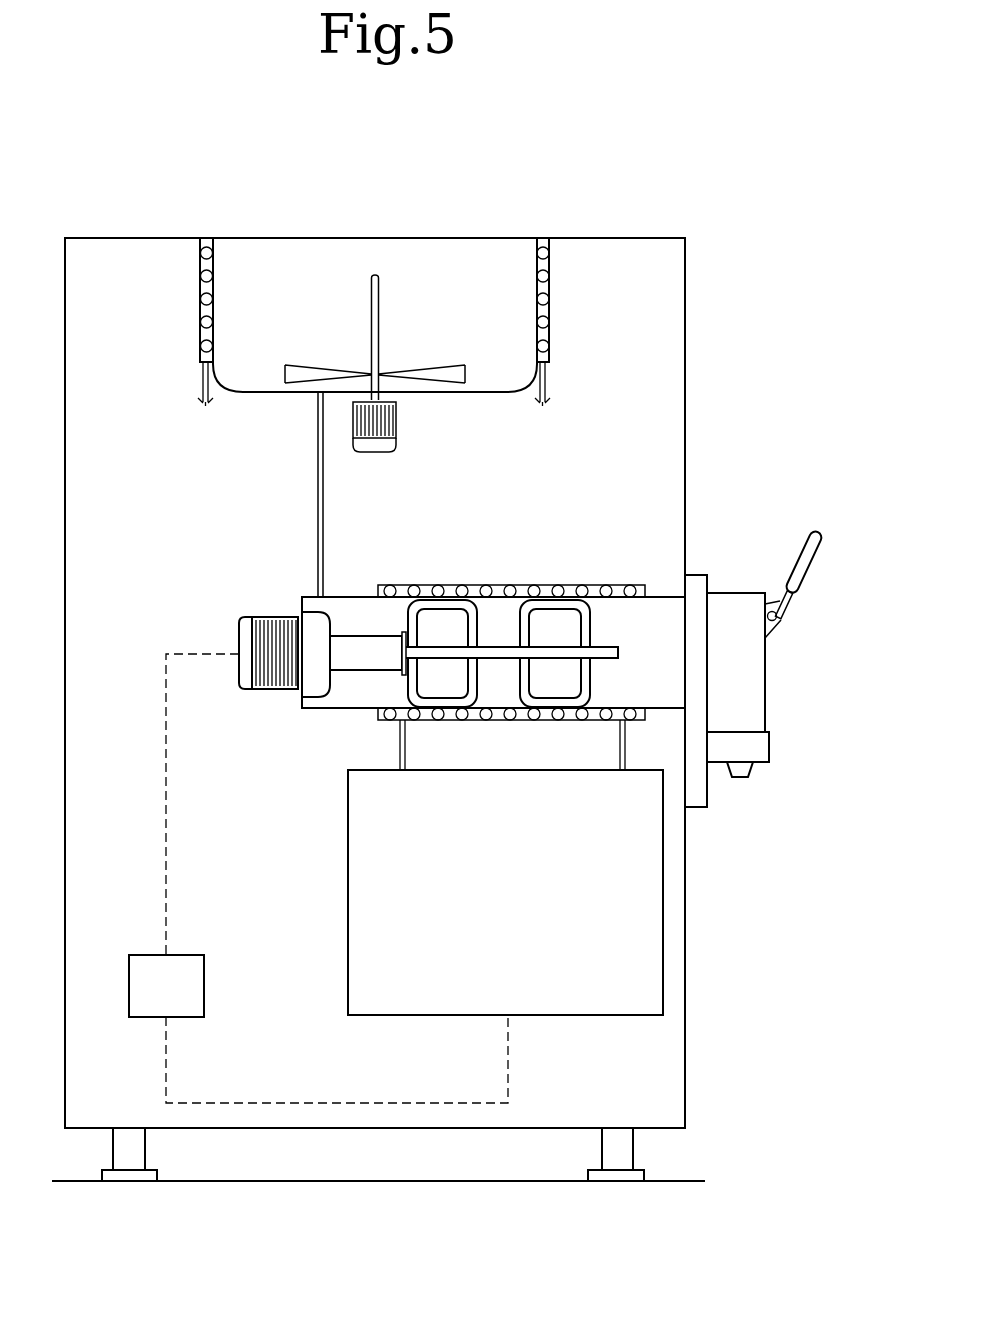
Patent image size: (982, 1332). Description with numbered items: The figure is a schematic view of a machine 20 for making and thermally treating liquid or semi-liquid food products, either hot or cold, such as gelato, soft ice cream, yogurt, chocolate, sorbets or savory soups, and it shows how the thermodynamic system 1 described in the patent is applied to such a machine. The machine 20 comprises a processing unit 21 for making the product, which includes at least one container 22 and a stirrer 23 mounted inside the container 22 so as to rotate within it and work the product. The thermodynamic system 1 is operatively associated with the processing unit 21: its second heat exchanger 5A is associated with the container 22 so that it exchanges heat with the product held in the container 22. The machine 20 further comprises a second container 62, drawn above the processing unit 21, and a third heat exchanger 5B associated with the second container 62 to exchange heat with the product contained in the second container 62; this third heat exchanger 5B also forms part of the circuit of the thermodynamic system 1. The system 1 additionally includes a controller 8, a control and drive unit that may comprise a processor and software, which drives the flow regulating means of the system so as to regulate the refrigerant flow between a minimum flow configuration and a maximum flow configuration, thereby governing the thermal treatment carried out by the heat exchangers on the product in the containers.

The machine 20 is at (603, 188).
The third heat exchanger 5B is at (567, 332).
The second container 62 is at (440, 301).
The second heat exchanger 5A is at (531, 601).
The stirrer 23 is at (357, 622).
The processing unit 21 is at (501, 571).
The container 22 is at (322, 708).
The thermodynamic system 1 is at (516, 909).
The controller 8 is at (180, 1000).